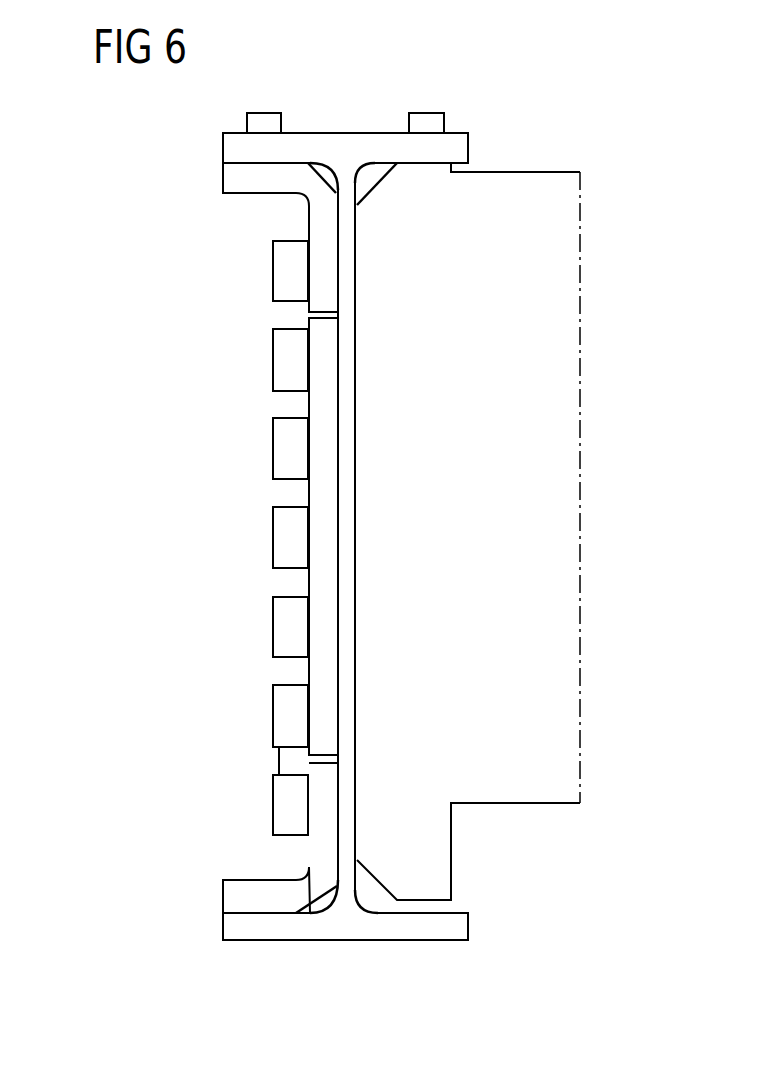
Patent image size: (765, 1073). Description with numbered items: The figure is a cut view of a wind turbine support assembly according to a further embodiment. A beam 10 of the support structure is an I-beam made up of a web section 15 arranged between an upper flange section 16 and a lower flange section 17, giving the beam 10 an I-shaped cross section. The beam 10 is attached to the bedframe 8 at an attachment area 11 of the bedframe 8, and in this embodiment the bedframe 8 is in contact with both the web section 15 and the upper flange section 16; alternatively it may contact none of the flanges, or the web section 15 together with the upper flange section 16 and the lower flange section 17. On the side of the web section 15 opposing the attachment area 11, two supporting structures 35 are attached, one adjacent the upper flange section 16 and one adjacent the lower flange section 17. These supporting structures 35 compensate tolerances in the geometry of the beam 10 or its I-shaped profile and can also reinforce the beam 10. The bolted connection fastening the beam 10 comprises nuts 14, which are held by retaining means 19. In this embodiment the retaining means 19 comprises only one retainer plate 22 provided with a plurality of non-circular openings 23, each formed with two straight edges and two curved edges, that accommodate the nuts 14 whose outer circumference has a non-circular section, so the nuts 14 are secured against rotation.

The bedframe 8 is at (497, 313).
The beam 10 is at (293, 133).
The attachment area 11 is at (362, 374).
The nut 14 is at (290, 358).
The web section 15 is at (343, 540).
The upper flange section 16 is at (372, 133).
The lower flange section 17 is at (377, 930).
The retaining means 19 is at (323, 537).
The retainer plate 22 is at (322, 647).
The non-circular opening 23 is at (308, 617).
The supporting structure 35 is at (245, 177).